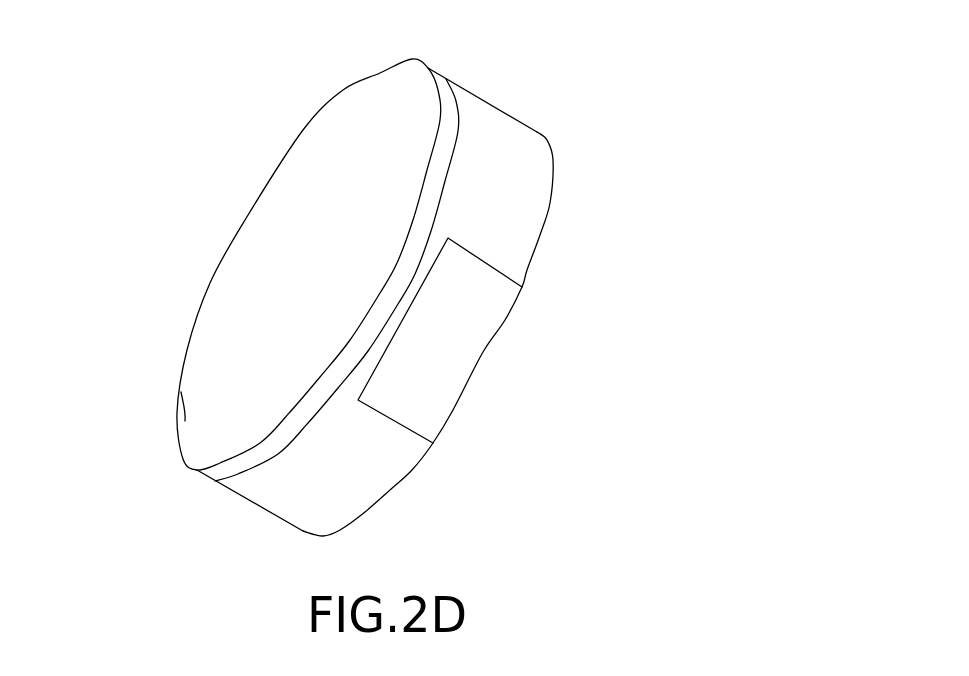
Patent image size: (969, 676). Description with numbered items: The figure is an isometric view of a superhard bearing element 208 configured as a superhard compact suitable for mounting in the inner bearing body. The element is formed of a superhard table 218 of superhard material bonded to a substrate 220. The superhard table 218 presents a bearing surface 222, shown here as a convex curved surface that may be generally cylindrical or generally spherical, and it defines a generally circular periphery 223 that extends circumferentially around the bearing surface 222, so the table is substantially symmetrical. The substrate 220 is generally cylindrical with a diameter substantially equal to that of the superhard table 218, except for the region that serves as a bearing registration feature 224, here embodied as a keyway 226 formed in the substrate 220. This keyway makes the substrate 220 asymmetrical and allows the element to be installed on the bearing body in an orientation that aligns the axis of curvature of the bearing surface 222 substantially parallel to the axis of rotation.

The superhard bearing element 208 is at (366, 313).
The bearing surface 222 is at (260, 233).
The generally circular periphery 223 is at (177, 430).
The substrate 220 is at (277, 500).
The keyway 226 is at (467, 348).
The bearing registration feature 224 is at (491, 401).
The superhard table 218 is at (186, 486).